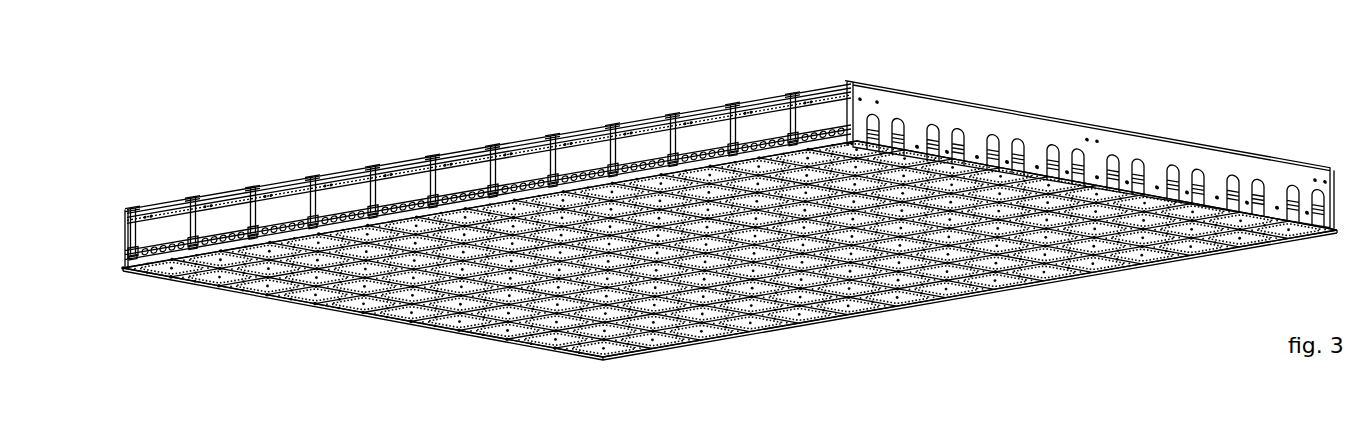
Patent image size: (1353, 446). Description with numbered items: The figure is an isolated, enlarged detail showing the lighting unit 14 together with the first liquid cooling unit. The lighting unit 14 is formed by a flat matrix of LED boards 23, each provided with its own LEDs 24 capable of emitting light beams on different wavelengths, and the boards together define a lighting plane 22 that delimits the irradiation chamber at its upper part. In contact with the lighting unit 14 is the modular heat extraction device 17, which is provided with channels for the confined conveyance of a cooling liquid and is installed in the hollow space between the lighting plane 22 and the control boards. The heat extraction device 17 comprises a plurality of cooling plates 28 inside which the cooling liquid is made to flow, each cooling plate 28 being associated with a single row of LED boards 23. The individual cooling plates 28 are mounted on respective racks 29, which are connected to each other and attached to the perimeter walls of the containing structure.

The lighting unit 14 is at (258, 316).
The heat extraction device 17 is at (116, 263).
The lighting plane 22 is at (600, 364).
The LED boards 23 is at (749, 343).
The LEDs 24 is at (624, 344).
The cooling plates 28 is at (466, 166).
The racks 29 is at (205, 200).